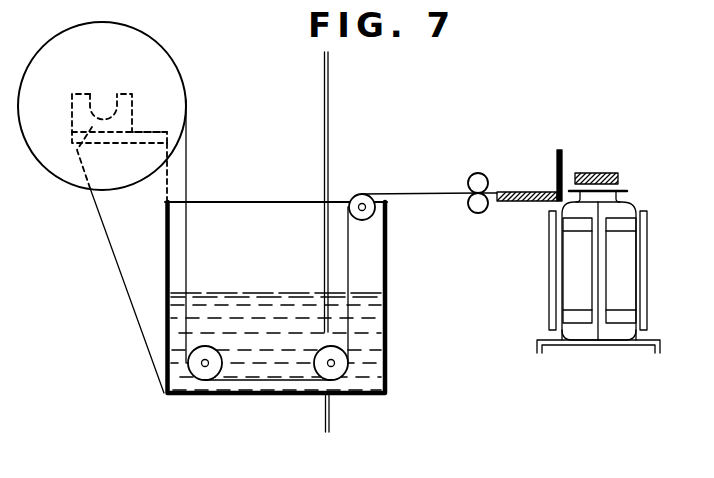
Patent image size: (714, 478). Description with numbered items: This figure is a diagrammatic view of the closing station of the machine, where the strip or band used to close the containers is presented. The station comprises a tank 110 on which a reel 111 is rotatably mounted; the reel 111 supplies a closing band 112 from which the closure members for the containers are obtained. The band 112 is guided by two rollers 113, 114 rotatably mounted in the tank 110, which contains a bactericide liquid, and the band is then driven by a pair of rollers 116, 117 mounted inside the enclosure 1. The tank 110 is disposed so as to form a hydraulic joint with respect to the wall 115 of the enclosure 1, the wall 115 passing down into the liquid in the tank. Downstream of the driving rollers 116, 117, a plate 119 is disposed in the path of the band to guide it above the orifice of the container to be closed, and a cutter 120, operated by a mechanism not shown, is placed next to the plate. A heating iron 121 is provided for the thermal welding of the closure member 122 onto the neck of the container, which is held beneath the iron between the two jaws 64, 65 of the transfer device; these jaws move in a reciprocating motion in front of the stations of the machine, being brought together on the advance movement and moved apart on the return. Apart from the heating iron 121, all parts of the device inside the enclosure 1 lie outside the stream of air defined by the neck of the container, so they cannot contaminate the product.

The enclosure 1 is at (445, 324).
The jaw 64 is at (648, 282).
The jaw 65 is at (548, 272).
The tank 110 is at (273, 214).
The reel 111 is at (184, 101).
The closing band 112 is at (187, 185).
The roller 113 is at (208, 353).
The roller 114 is at (320, 352).
The wall 115 is at (325, 97).
The driving roller 116 is at (469, 176).
The driving roller 117 is at (468, 209).
The plate 119 is at (530, 201).
The cutter 120 is at (557, 160).
The heating iron 121 is at (597, 170).
The closure member 122 is at (627, 190).